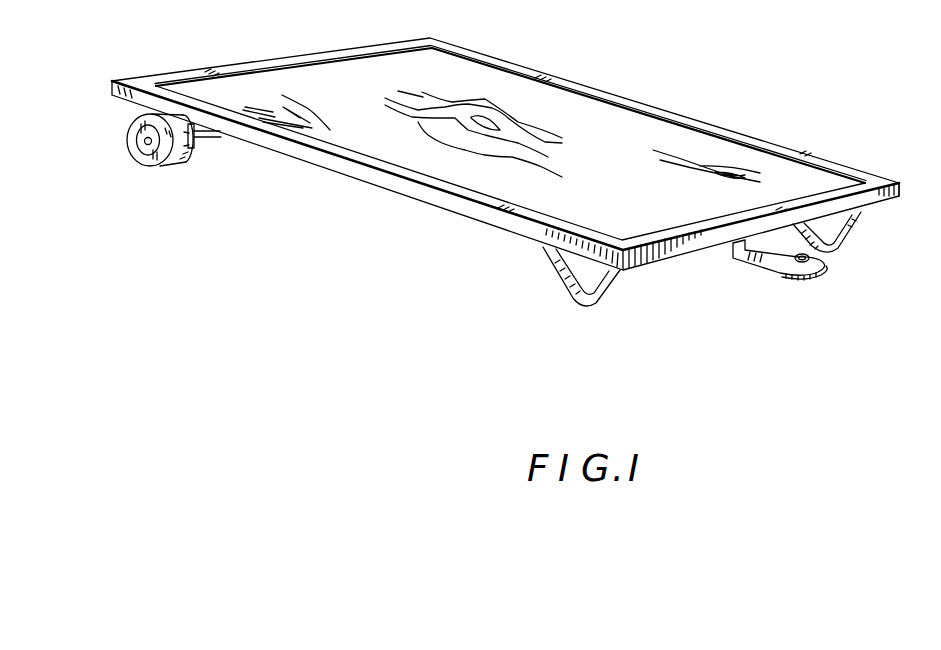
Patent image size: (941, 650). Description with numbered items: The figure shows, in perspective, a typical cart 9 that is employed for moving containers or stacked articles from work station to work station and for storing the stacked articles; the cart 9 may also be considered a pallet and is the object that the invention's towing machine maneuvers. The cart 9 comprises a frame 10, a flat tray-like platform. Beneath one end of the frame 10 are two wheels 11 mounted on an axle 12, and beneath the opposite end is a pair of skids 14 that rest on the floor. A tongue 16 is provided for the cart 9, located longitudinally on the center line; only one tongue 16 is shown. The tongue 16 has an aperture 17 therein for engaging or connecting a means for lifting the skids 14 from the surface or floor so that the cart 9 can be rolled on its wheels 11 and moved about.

The cart 9 is at (643, 89).
The frame 10 is at (871, 175).
The wheels 11 is at (178, 168).
The axle 12 is at (210, 136).
The skids 14 is at (607, 301).
The tongue 16 is at (811, 270).
The aperture 17 is at (816, 264).